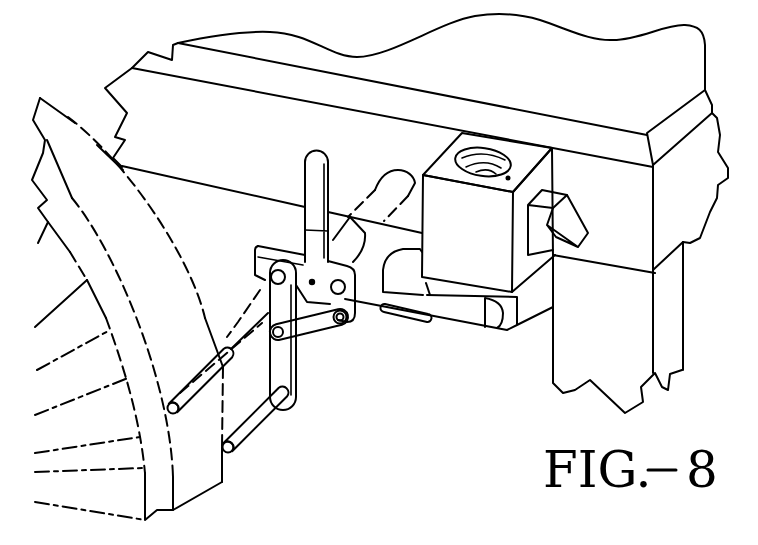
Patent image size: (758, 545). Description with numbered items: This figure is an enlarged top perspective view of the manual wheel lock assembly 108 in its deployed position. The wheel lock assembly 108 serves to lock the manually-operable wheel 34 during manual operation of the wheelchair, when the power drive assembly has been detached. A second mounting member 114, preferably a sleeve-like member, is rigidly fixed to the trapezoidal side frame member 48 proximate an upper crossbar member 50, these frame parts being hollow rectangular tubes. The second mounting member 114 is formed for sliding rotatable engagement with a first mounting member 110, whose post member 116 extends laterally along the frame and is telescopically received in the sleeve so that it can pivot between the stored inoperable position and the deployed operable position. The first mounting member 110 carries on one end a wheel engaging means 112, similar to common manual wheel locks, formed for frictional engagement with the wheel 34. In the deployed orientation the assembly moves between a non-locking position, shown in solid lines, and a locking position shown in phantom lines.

The manually-operable wheel 34 is at (72, 115).
The trapezoidal side frame member 48 is at (258, 131).
The crossbar member 50 is at (683, 190).
The wheel lock assembly 108 is at (412, 344).
The first mounting member 110 is at (266, 236).
The wheel engaging means 112 is at (232, 315).
The second mounting member 114 is at (503, 344).
The post member 116 is at (398, 214).